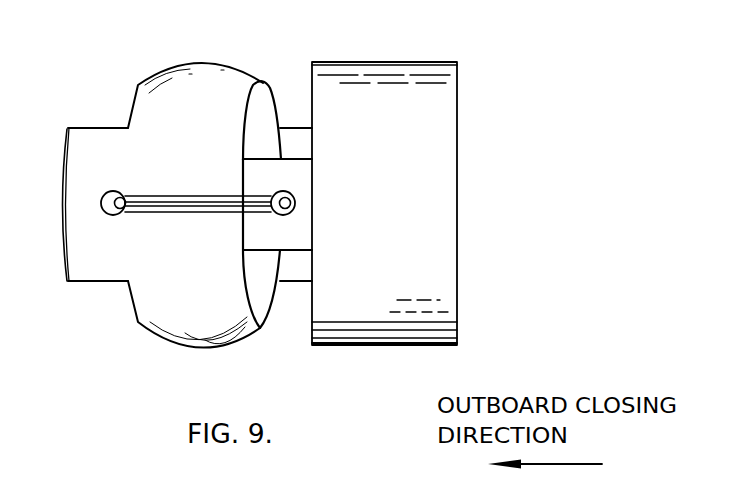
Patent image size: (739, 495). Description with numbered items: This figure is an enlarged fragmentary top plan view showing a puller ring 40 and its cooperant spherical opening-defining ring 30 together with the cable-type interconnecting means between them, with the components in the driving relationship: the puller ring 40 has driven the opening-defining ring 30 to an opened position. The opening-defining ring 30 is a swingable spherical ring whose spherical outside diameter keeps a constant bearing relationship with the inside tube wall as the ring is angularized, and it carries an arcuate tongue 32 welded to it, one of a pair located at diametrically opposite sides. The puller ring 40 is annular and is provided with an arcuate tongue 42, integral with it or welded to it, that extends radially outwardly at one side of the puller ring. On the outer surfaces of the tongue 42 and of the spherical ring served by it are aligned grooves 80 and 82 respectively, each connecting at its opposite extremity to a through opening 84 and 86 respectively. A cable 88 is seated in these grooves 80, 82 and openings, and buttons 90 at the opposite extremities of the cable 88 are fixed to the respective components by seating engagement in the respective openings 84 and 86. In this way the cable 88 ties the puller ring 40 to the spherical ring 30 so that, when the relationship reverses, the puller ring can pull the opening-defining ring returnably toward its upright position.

The opening-defining ring 30 is at (206, 98).
The arcuate tongue 32 is at (90, 143).
The puller ring 40 is at (385, 87).
The arcuate tongue 42 is at (292, 167).
The groove 80 is at (277, 204).
The groove 82 is at (167, 214).
The through opening 84 is at (286, 192).
The through opening 86 is at (110, 194).
The cable 88 is at (203, 205).
The button 90 is at (112, 213).